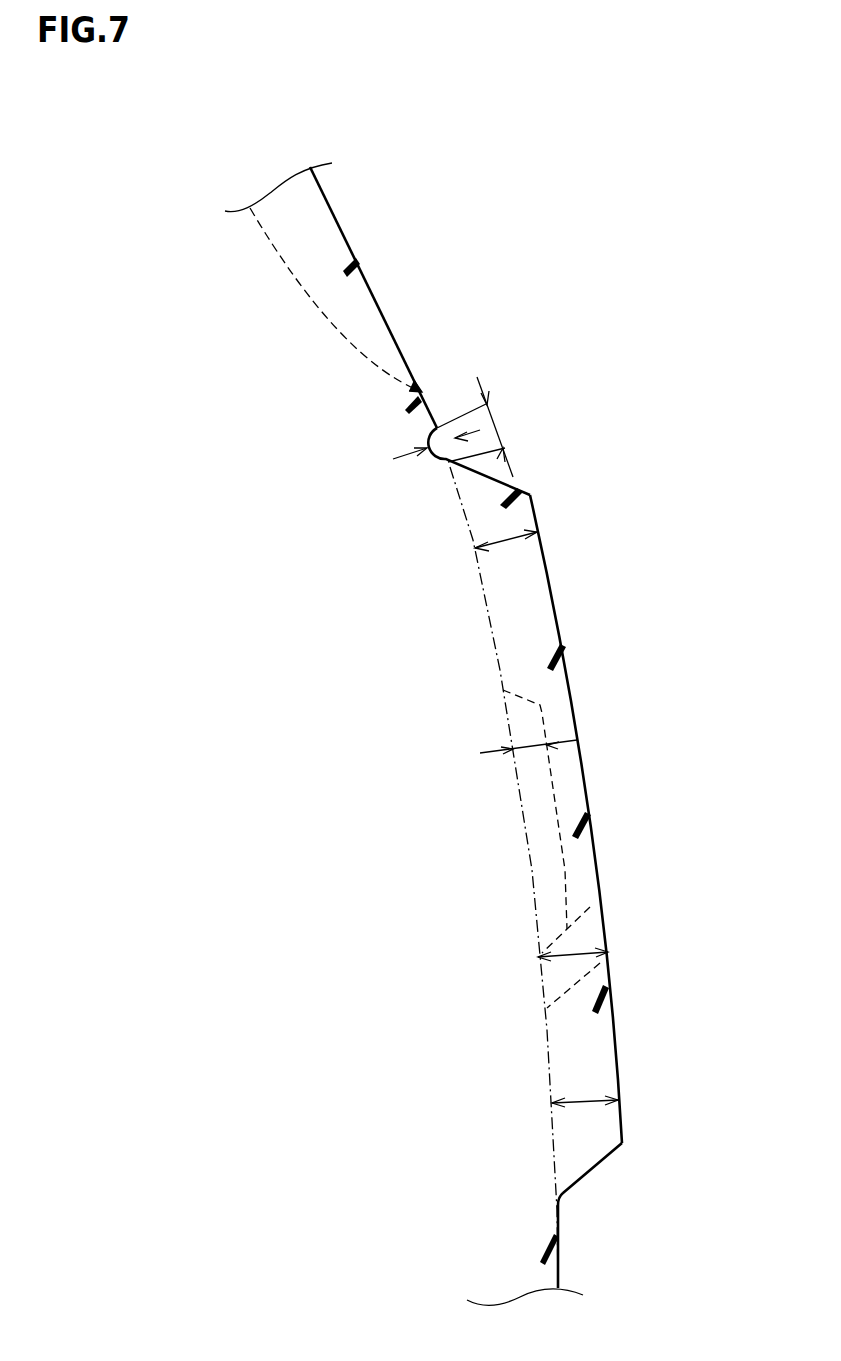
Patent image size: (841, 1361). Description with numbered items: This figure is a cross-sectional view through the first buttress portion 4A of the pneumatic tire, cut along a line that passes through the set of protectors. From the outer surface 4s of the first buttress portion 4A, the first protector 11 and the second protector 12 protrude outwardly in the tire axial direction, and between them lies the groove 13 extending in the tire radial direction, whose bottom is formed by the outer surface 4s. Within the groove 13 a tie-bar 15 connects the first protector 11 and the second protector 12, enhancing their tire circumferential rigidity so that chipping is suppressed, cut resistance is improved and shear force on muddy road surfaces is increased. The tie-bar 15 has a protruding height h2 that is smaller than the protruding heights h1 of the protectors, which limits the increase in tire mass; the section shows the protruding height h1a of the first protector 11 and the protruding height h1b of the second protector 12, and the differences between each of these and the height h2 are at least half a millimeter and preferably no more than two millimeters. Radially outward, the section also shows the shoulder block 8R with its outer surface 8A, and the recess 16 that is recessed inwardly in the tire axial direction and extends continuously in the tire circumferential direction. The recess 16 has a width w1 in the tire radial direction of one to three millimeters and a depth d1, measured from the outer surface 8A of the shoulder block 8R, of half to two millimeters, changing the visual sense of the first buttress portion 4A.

The outer surface of shoulder block 8A is at (378, 285).
The shoulder block 8R is at (472, 293).
The recess 16 is at (502, 390).
The first buttress portion 4A is at (610, 363).
The depth of recess d1 is at (427, 437).
The width of recess w1 is at (493, 427).
The protruding height of second protector h1b is at (508, 538).
The groove 13 is at (567, 595).
The protruding height of tie-bar h2 is at (532, 742).
The tie-bar 15 is at (547, 835).
The first protector 11 is at (588, 932).
The protruding height of first protector h1a is at (572, 955).
The second protector 12 is at (577, 1047).
The protruding height of protectors h1 is at (588, 1100).
The outer surface of first buttress portion 4s is at (562, 1265).